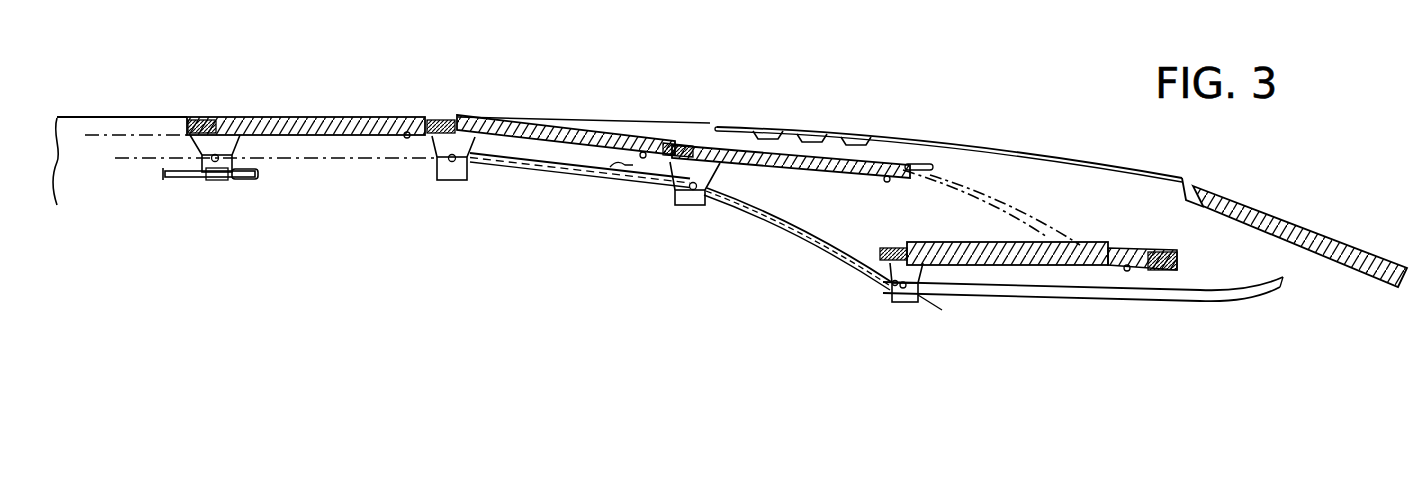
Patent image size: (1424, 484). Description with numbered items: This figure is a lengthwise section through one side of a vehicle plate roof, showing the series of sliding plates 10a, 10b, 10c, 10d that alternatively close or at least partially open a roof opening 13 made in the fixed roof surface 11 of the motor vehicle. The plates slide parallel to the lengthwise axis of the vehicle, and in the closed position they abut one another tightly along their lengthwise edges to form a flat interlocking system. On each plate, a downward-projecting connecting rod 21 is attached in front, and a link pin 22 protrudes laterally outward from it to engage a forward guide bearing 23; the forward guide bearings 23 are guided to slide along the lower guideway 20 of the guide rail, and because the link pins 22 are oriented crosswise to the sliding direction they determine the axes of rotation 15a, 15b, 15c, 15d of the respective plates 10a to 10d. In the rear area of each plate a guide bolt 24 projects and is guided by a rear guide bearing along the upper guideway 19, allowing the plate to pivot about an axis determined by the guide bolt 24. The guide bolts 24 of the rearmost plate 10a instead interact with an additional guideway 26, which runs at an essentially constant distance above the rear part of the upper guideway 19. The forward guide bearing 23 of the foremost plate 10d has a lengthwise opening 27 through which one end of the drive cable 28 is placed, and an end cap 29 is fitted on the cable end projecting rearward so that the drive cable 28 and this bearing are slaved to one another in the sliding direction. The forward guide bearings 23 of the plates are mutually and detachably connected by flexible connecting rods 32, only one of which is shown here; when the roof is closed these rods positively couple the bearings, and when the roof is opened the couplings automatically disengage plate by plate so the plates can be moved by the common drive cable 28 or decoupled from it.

The sliding plate 10a is at (1017, 265).
The sliding plate 10b is at (808, 155).
The sliding plate 10c is at (557, 127).
The sliding plate 10d is at (316, 125).
The fixed roof surface 11 is at (913, 135).
The roof opening 13 is at (95, 176).
The axis of rotation 15a is at (897, 302).
The axis of rotation 15b is at (678, 205).
The axis of rotation 15c is at (445, 180).
The axis of rotation 15d is at (240, 155).
The upper guideway 19 is at (950, 200).
The lower guideway 20 is at (773, 224).
The connecting rod 21 is at (893, 281).
The link pin 22 is at (893, 292).
The forward guide bearing 23 is at (222, 180).
The guide bolt 24 is at (1127, 272).
The additional guideway 26 is at (1012, 200).
The lengthwise opening 27 is at (207, 180).
The drive cable 28 is at (165, 178).
The end cap 29 is at (250, 180).
The flexible connecting rod 32 is at (548, 172).